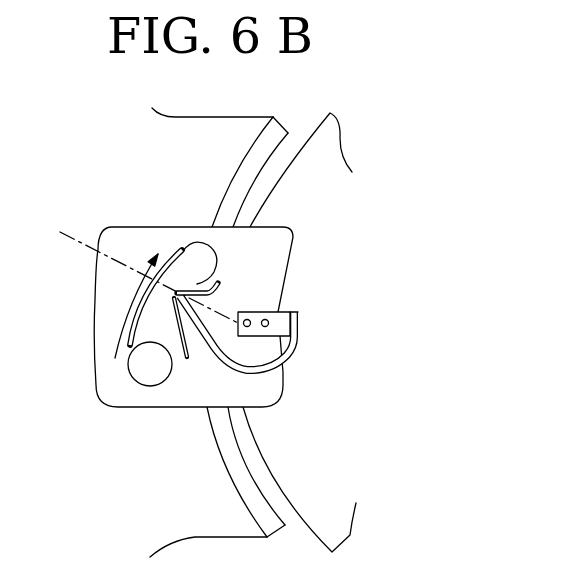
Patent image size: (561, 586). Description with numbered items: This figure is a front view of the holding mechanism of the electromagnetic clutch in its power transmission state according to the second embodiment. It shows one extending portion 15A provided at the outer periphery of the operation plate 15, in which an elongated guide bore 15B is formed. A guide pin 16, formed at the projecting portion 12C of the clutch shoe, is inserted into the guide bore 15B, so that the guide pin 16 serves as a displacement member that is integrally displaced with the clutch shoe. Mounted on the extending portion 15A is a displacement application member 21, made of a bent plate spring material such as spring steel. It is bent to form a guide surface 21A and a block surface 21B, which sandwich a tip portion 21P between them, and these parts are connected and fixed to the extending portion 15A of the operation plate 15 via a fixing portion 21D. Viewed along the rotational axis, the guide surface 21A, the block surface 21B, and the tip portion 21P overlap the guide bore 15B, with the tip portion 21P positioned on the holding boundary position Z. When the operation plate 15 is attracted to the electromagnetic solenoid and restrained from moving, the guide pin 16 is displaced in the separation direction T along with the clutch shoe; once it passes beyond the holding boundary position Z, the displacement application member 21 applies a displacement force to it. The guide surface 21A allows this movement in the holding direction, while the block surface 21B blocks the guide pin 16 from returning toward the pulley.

The projecting portion 12C is at (233, 133).
The operation plate 15 is at (316, 153).
The extending portion 15A is at (135, 398).
The guide bore 15B is at (187, 243).
The guide pin 16 is at (143, 362).
The displacement application member 21 is at (292, 365).
The guide surface 21A is at (190, 358).
The block surface 21B is at (198, 281).
The fixing portion 21D is at (258, 312).
The tip portion 21P is at (178, 293).
The separation direction T is at (148, 272).
The holding boundary position Z is at (136, 271).